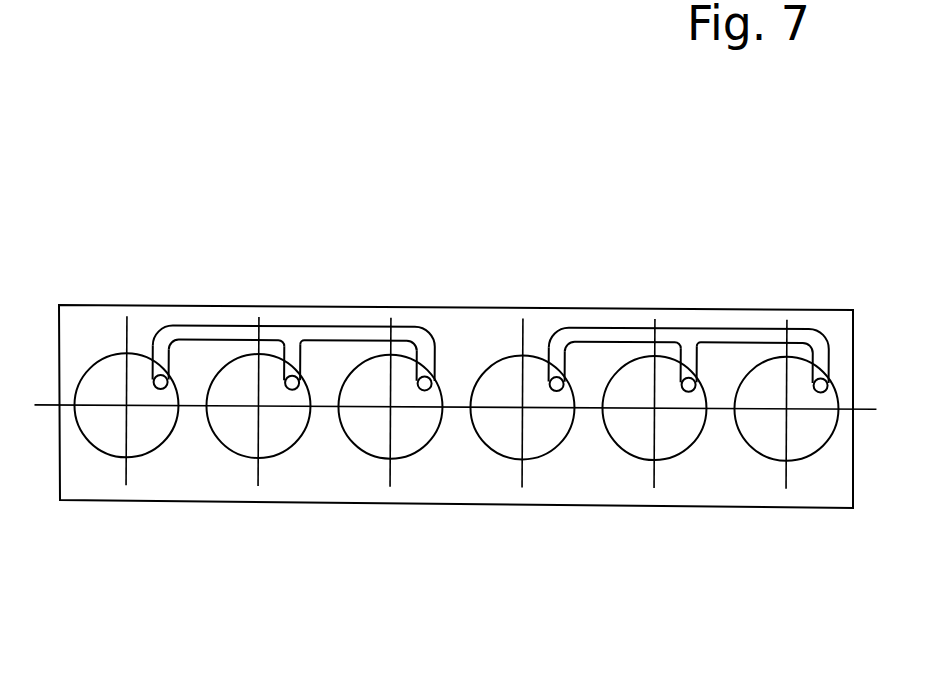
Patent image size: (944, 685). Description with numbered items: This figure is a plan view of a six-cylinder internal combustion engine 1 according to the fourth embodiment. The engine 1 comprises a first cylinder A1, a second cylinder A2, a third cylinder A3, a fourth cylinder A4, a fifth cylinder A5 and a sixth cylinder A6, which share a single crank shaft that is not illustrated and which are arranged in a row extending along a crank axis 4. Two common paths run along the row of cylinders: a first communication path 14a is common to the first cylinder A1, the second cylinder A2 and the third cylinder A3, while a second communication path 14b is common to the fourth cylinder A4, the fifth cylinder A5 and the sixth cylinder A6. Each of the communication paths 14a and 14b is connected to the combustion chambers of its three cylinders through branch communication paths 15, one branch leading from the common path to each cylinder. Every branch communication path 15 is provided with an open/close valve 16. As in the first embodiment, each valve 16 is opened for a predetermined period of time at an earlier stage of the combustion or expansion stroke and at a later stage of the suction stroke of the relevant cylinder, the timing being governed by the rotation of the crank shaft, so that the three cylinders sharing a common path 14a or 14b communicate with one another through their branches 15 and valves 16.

The six-cylinder internal combustion engine 1 is at (723, 284).
The crank axis 4 is at (100, 402).
The first communication path 14a is at (636, 330).
The second communication path 14b is at (350, 326).
The branch communication path 15 is at (157, 376).
The open/close valve 16 is at (165, 382).
The first cylinder A1 is at (818, 475).
The second cylinder A2 is at (686, 473).
The third cylinder A3 is at (568, 471).
The fourth cylinder A4 is at (441, 466).
The fifth cylinder A5 is at (310, 463).
The sixth cylinder A6 is at (172, 467).